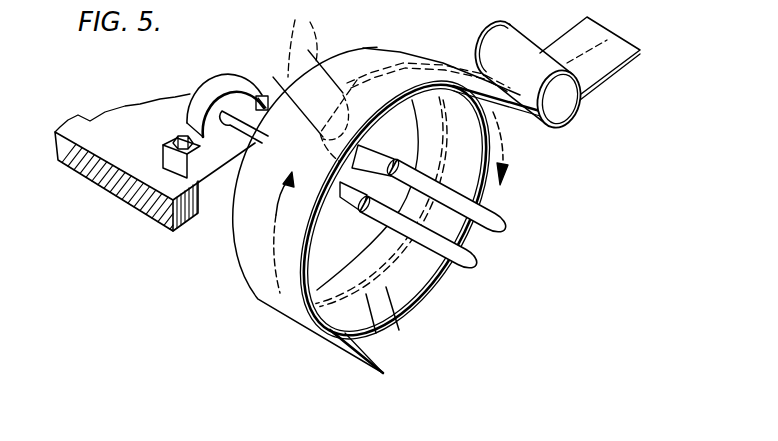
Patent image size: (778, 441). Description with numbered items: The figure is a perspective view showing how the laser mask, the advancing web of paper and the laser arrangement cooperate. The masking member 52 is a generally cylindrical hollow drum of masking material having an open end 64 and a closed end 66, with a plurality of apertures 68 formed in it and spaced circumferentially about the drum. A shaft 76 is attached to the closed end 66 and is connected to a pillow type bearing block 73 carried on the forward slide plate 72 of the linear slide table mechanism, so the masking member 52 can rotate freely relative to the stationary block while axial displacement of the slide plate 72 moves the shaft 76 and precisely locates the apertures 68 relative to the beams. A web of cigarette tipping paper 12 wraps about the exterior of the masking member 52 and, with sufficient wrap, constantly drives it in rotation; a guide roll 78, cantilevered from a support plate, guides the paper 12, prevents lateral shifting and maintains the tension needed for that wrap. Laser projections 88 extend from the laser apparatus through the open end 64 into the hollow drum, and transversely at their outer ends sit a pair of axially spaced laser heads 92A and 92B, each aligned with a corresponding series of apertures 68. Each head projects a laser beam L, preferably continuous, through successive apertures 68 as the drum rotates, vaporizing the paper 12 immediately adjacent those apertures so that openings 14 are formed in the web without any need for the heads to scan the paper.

The cigarette tipping paper 12 is at (240, 232).
The openings 14 is at (380, 75).
The masking member 52 is at (483, 190).
The open end 64 is at (416, 276).
The closed end 66 is at (357, 248).
The apertures 68 is at (377, 322).
The slide plate 72 is at (78, 136).
The pillow type bearing block 73 is at (220, 90).
The shaft 76 is at (274, 110).
The guide rolls 78 is at (560, 100).
The laser projections 88 is at (484, 227).
The laser head 92A is at (352, 192).
The laser head 92B is at (385, 150).
The laser beam L is at (302, 43).